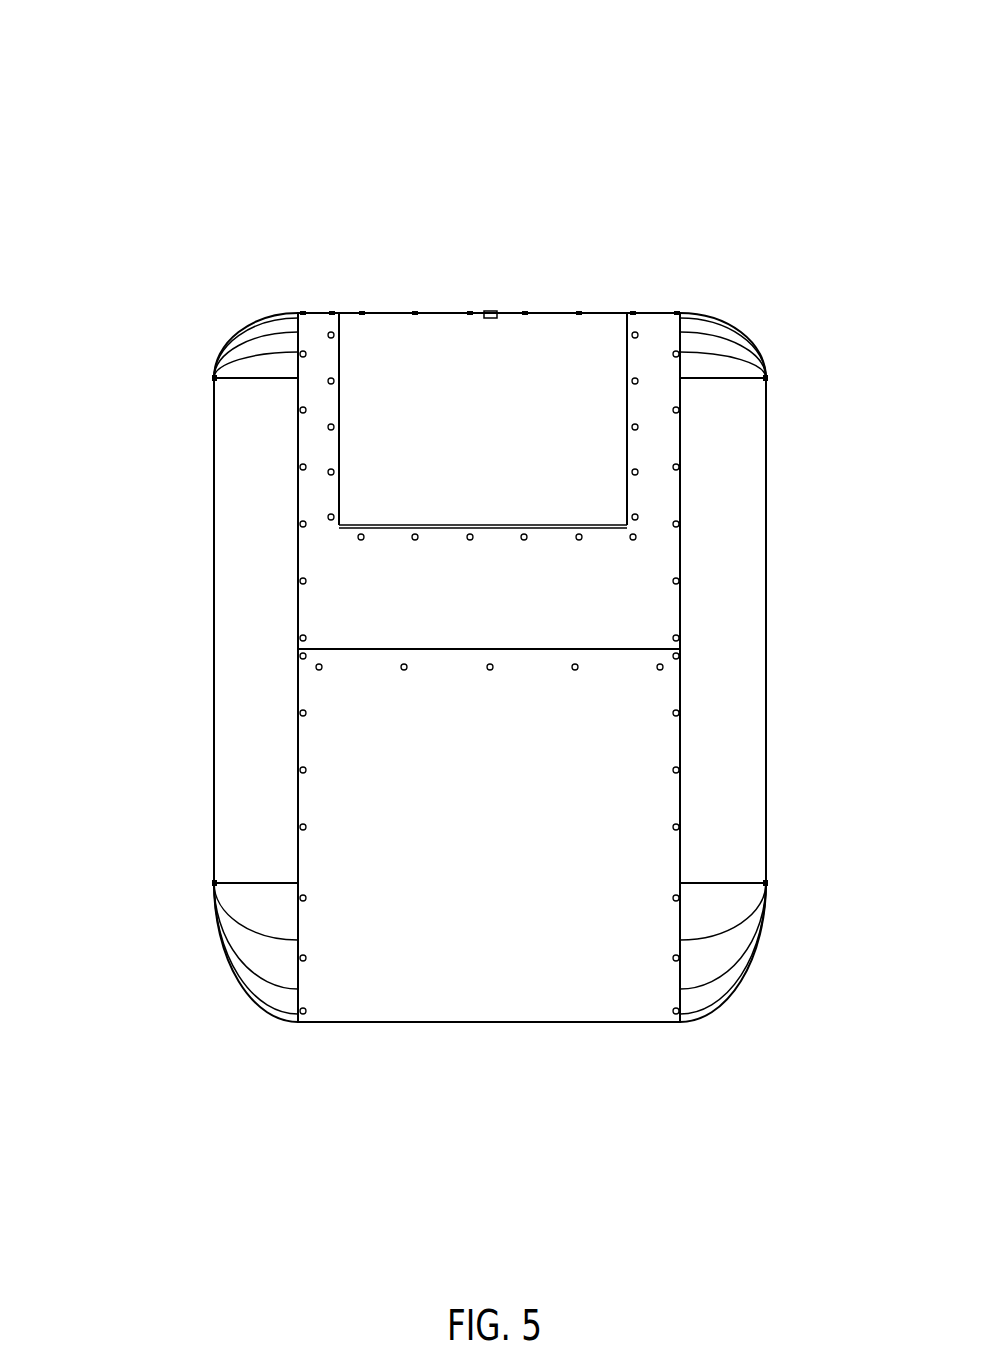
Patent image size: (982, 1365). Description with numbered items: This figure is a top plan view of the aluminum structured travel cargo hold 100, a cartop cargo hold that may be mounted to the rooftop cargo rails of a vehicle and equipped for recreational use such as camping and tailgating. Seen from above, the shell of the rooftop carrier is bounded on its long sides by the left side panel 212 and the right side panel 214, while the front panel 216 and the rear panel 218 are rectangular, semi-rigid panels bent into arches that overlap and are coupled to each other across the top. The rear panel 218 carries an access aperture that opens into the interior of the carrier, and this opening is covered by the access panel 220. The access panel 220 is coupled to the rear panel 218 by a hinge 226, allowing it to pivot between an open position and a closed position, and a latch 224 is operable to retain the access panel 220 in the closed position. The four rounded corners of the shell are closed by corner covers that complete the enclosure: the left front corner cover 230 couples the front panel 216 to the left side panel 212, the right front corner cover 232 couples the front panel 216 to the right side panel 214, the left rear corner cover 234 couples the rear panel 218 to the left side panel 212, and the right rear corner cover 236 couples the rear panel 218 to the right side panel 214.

The aluminum structured travel cargo hold 100 is at (124, 177).
The left side panel 212 is at (733, 688).
The right side panel 214 is at (250, 669).
The front panel 216 is at (506, 991).
The rear panel 218 is at (653, 602).
The access panel 220 is at (542, 373).
The latch 224 is at (490, 308).
The hinge 226 is at (385, 528).
The left front corner cover 230 is at (743, 972).
The right front corner cover 232 is at (243, 972).
The left rear corner cover 234 is at (713, 348).
The right rear corner cover 236 is at (265, 338).